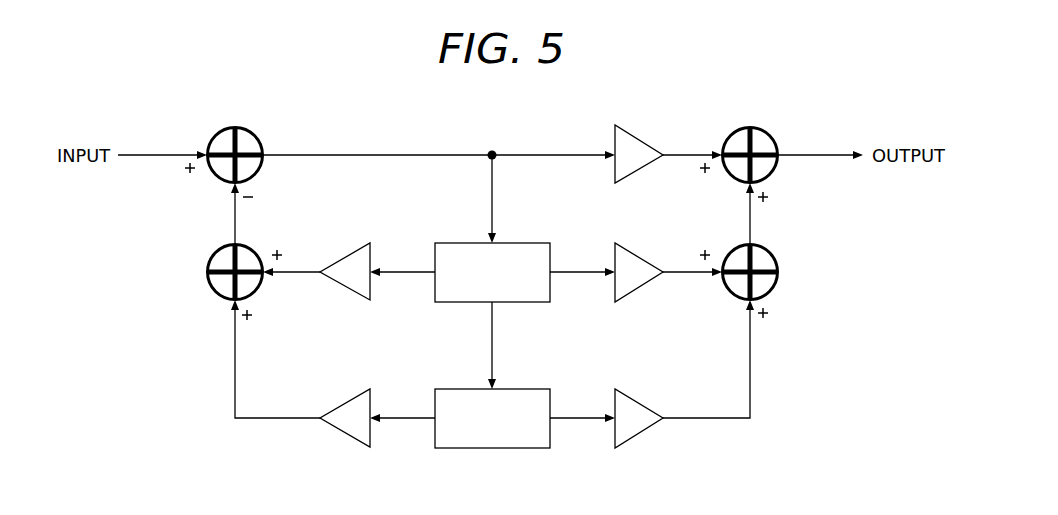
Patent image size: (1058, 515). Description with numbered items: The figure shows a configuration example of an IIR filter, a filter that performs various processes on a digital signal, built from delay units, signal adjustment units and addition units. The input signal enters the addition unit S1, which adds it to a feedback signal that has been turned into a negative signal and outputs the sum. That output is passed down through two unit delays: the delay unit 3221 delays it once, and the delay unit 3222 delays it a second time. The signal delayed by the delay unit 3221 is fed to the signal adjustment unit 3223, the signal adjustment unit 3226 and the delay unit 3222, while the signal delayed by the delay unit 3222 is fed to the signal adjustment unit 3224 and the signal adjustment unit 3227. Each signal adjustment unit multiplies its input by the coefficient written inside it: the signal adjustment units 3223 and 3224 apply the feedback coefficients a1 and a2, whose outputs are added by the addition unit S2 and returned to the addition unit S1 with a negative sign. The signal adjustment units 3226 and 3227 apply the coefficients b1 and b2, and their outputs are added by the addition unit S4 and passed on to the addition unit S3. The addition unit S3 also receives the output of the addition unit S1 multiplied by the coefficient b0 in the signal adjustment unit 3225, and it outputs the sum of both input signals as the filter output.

The addition unit S1 is at (215, 132).
The addition unit S2 is at (215, 249).
The addition unit S3 is at (770, 132).
The addition unit S4 is at (772, 249).
The delay unit 3221 is at (458, 243).
The delay unit 3222 is at (458, 389).
The signal adjustment unit 3223 is at (359, 243).
The signal adjustment unit 3224 is at (359, 389).
The signal adjustment unit 3225 is at (632, 129).
The signal adjustment unit 3226 is at (632, 246).
The signal adjustment unit 3227 is at (632, 392).